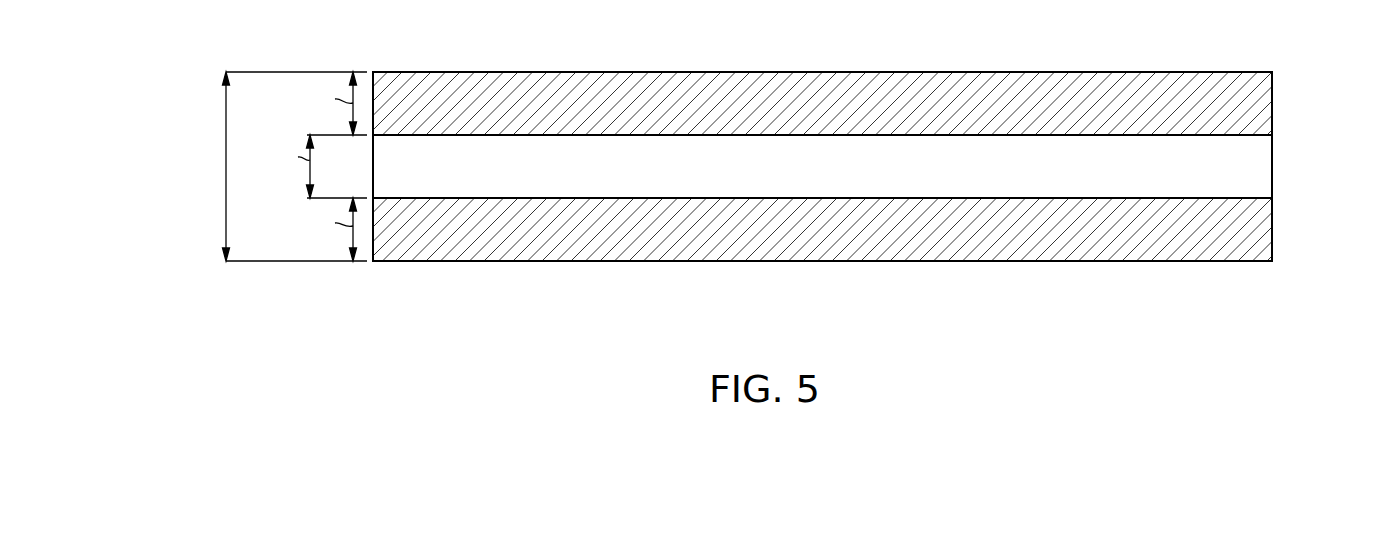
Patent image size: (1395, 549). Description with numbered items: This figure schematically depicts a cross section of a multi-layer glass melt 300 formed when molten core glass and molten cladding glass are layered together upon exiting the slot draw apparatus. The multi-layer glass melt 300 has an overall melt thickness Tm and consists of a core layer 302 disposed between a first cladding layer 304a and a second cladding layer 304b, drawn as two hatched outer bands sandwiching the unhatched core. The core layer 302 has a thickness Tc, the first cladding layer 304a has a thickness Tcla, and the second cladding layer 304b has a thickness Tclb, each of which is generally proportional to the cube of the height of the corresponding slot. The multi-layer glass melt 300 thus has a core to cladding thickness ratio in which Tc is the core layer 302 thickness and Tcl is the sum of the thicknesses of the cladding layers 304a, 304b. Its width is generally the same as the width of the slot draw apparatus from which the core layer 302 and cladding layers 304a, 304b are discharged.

The multi-layer glass melt 300 is at (749, 166).
The core layer 302 is at (1272, 172).
The first cladding layer 304a is at (1272, 103).
The second cladding layer 304b is at (1272, 235).